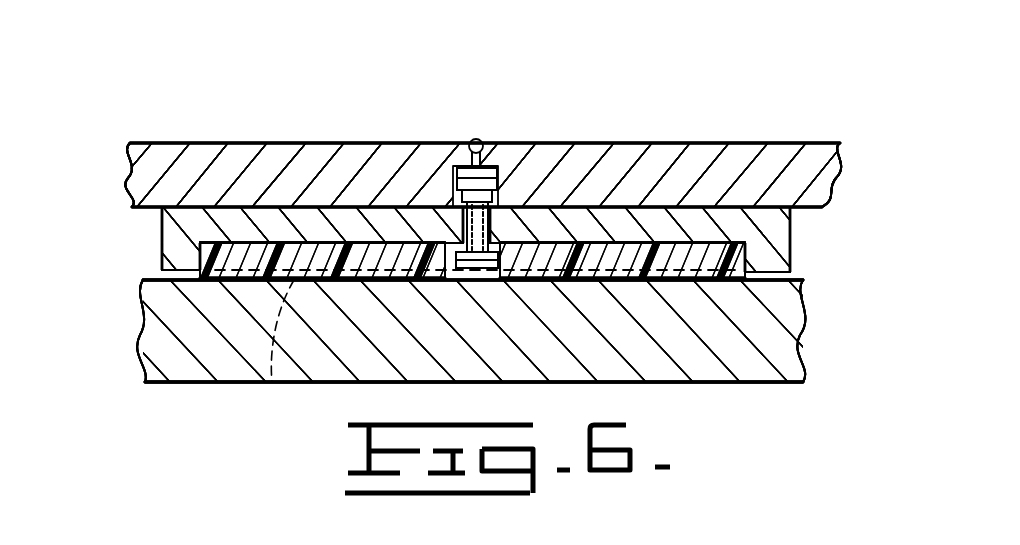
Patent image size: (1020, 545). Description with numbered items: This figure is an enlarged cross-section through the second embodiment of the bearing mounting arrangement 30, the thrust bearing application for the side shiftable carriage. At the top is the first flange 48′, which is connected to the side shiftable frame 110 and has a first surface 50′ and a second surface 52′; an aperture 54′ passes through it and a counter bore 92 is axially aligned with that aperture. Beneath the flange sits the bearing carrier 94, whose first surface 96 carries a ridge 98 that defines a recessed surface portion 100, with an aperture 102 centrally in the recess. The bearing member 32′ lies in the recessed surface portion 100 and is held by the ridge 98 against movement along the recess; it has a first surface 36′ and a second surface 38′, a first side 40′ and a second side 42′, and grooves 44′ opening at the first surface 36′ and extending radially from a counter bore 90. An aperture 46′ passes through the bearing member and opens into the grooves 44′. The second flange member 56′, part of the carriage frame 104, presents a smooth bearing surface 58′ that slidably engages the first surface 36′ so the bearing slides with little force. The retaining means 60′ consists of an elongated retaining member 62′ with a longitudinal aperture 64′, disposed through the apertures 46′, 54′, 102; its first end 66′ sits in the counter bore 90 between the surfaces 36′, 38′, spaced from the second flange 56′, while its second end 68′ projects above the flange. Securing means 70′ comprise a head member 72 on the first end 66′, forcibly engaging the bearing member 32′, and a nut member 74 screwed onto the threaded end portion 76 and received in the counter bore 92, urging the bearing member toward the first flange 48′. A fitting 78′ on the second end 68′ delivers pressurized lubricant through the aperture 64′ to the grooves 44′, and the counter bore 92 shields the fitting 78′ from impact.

The bearing mounting arrangement 30 is at (648, 87).
The bearing member 32′ is at (201, 203).
The first surface of bearing member 36′ is at (803, 335).
The second surface of bearing member 38′ is at (745, 236).
The first side of bearing member 40′ is at (200, 262).
The second side of bearing member 42′ is at (748, 248).
The groove 44′ is at (270, 384).
The aperture of bearing member 46′ is at (492, 230).
The first flange 48′ is at (338, 143).
The first surface of first flange 50′ is at (880, 210).
The second surface of first flange 52′ is at (349, 158).
The aperture of first flange 54′ is at (453, 178).
The second flange member 56′ is at (797, 356).
The bearing surface 58′ is at (160, 278).
The retaining means 60′ is at (456, 282).
The elongated retaining member 62′ is at (492, 228).
The aperture of elongated retaining member 64′ is at (522, 282).
The first end of elongated retaining member 66′ is at (451, 303).
The second end of elongated retaining member 68′ is at (503, 175).
The securing means 70′ is at (604, 163).
The head member 72 is at (447, 268).
The nut member 74 is at (465, 196).
The threaded end portion 76 is at (495, 194).
The fitting 78′ is at (476, 139).
The counter bore in bearing member 90 is at (478, 280).
The counter bore in first flange 92 is at (497, 168).
The bearing carrier 94 is at (687, 222).
The first surface of bearing carrier 96 is at (780, 205).
The ridge 98 is at (105, 228).
The recessed surface portion 100 is at (645, 280).
The aperture of bearing carrier 102 is at (462, 232).
The carriage frame 104 is at (131, 355).
The side shiftable frame 110 is at (856, 148).